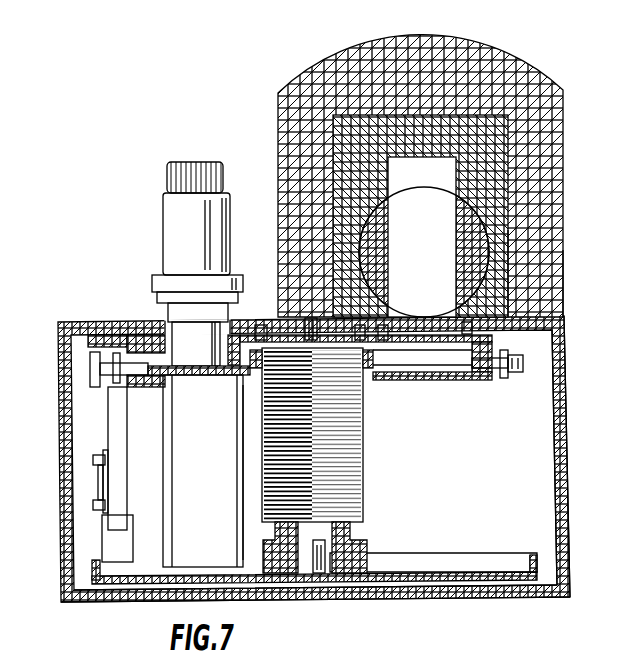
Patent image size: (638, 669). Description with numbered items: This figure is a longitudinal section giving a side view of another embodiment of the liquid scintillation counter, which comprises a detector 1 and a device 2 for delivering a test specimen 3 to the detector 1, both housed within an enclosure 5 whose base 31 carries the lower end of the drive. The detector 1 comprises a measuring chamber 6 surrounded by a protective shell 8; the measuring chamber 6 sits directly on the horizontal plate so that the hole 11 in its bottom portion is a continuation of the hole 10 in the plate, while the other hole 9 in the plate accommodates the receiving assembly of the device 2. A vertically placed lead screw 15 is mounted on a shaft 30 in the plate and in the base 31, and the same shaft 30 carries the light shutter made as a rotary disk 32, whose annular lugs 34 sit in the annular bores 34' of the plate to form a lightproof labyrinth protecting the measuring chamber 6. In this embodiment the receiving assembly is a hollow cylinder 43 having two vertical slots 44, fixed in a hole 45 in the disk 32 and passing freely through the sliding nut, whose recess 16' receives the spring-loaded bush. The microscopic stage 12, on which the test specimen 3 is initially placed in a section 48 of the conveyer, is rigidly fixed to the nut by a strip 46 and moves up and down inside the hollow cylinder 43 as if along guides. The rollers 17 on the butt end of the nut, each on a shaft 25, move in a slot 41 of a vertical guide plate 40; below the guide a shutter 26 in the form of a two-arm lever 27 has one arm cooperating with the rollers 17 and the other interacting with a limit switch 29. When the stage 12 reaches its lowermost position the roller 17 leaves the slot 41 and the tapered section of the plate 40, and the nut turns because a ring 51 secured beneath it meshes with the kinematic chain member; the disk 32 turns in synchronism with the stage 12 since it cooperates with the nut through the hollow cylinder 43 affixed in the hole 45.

The detector 1 is at (510, 50).
The protective shell 8 is at (527, 117).
The measuring chamber 6 is at (450, 205).
The hole 11 is at (447, 315).
The annular lugs 34 is at (578, 283).
The annular bores 34' is at (556, 273).
The test specimen 3 is at (168, 210).
The section of the conveyer 48 is at (163, 280).
The microscopic stage 12 is at (188, 330).
The hole 9 is at (167, 327).
The shaft 30 is at (305, 322).
The hole 45 is at (250, 322).
The vertical plate 40 is at (60, 335).
The slot 41 is at (112, 408).
The vertical slots 44 is at (112, 412).
The limit switch 29 is at (93, 458).
The shutter 26 is at (105, 520).
The hollow cylinder 43 is at (175, 540).
The strip 46 is at (215, 378).
The ring 51 is at (255, 385).
The two-arm lever 27 is at (113, 601).
The lead screw 15 is at (363, 418).
The hole 10 is at (400, 372).
The recess 16' is at (422, 392).
The rotary disk 32 is at (450, 381).
The rollers 17 is at (512, 357).
The shaft 25 is at (513, 376).
The device 2 is at (462, 550).
The base 31 is at (537, 598).
The enclosure 5 is at (570, 558).